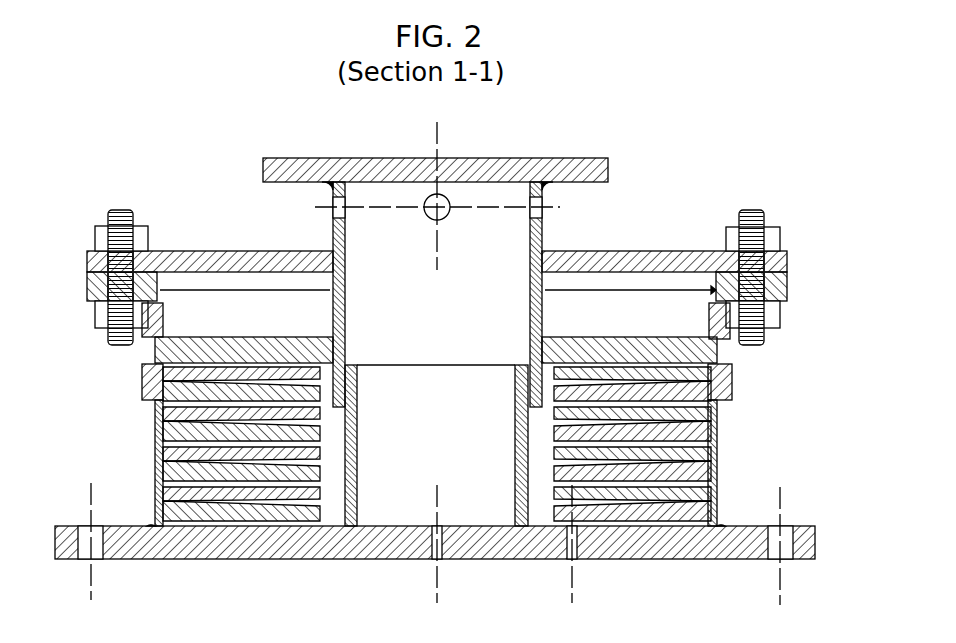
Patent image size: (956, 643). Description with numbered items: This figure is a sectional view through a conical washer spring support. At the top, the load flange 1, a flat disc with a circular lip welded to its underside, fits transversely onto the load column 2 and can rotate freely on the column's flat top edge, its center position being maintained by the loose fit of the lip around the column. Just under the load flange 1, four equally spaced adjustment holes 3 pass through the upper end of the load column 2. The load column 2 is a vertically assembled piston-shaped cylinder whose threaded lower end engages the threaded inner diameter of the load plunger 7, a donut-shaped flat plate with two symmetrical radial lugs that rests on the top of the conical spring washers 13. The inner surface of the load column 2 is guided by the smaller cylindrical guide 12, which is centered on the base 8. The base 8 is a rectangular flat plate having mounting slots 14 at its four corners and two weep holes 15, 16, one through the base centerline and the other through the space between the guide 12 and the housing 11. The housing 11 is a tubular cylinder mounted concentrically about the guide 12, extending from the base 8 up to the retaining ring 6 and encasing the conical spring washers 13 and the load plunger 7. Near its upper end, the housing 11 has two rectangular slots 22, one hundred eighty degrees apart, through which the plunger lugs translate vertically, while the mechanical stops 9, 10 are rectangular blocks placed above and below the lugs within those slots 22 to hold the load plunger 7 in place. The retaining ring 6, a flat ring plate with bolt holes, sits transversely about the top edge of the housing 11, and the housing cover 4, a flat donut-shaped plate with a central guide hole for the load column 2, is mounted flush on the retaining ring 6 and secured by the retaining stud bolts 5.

The load flange 1 is at (605, 159).
The load column 2 is at (333, 232).
The adjustment holes 3 is at (424, 212).
The housing cover 4 is at (626, 251).
The retaining stud bolts 5 is at (766, 216).
The retaining ring 6 is at (88, 282).
The load plunger 7 is at (222, 336).
The base 8 is at (815, 526).
The mechanical stop 9 is at (720, 339).
The mechanical stop 10 is at (732, 385).
The housing 11 is at (155, 432).
The guide 12 is at (516, 433).
The conical spring washers 13 is at (552, 457).
The mounting slots 14 is at (90, 559).
The weep hole 15 is at (433, 560).
The weep hole 16 is at (570, 560).
The rectangular slots 22 is at (715, 289).